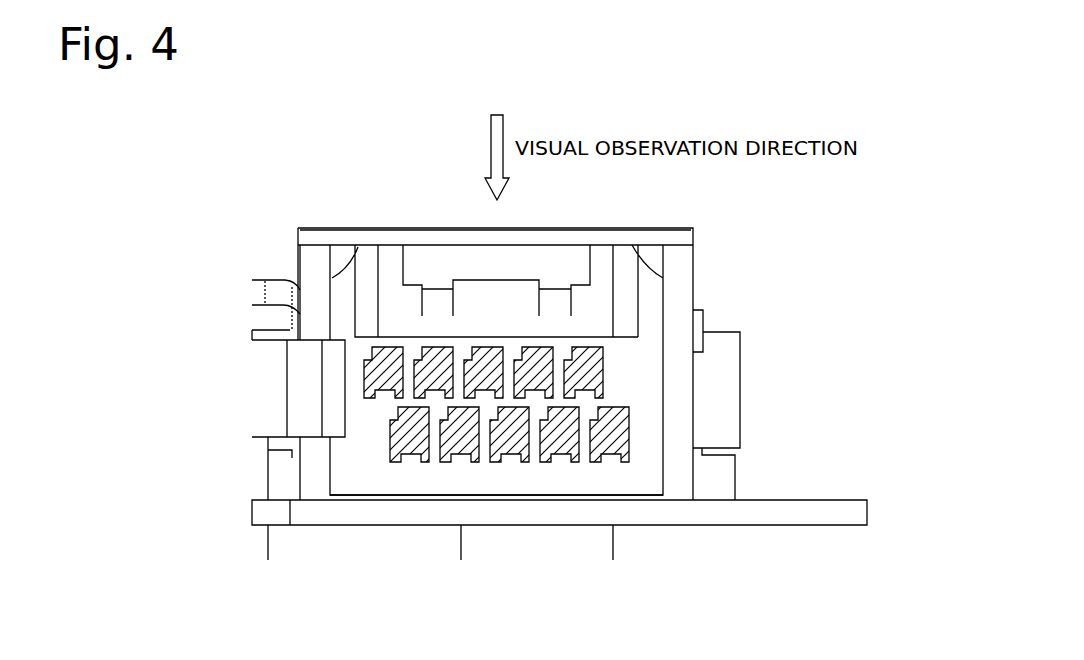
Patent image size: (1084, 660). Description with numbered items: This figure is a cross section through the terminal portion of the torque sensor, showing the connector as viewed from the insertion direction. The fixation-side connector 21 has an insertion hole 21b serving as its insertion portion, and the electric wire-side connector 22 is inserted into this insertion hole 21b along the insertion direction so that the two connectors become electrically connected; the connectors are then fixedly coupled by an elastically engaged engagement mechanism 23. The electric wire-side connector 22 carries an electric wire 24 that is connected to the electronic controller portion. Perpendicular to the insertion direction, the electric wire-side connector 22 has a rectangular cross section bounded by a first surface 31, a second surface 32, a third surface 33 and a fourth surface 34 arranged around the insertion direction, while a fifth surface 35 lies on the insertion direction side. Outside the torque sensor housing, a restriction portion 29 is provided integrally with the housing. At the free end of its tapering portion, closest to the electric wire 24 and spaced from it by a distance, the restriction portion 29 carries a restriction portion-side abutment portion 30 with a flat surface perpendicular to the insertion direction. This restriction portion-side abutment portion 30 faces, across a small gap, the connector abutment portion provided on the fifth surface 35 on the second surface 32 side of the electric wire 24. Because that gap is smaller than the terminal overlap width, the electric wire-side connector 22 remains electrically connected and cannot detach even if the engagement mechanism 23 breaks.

The fixation-side connector 21 is at (680, 268).
The insertion hole 21b is at (665, 305).
The electric wire-side connector 22 is at (367, 253).
The engagement mechanism 23 is at (569, 238).
The electric wire 24 is at (613, 428).
The restriction portion 29 is at (310, 452).
The restriction portion-side abutment portion 30 is at (331, 319).
The first surface 31 is at (345, 238).
The second surface 32 is at (312, 322).
The third surface 33 is at (582, 513).
The fourth surface 34 is at (676, 358).
The fifth surface 35 is at (645, 481).